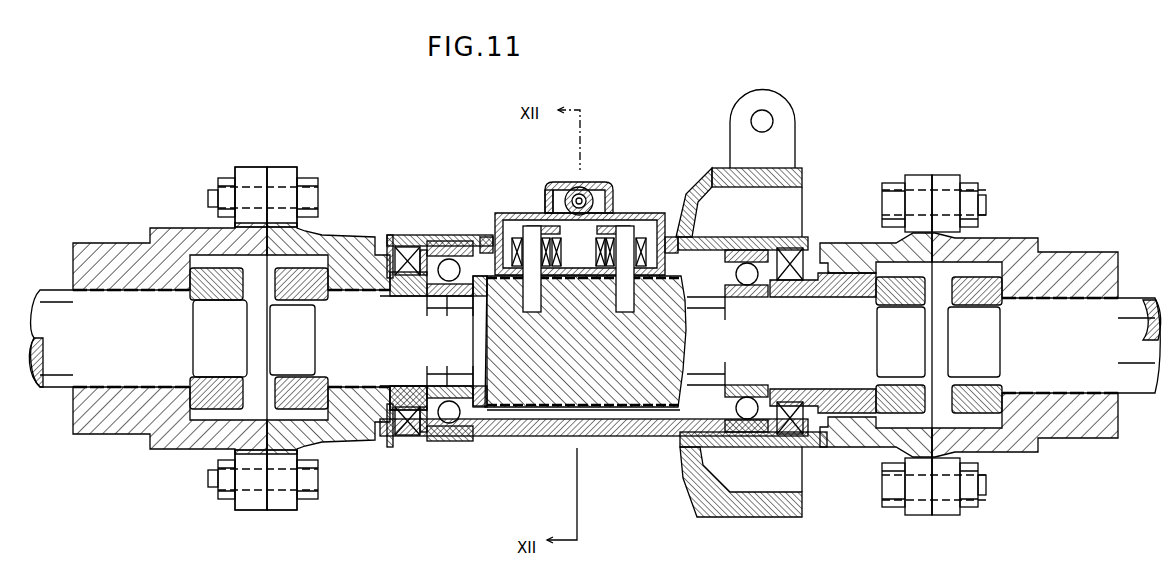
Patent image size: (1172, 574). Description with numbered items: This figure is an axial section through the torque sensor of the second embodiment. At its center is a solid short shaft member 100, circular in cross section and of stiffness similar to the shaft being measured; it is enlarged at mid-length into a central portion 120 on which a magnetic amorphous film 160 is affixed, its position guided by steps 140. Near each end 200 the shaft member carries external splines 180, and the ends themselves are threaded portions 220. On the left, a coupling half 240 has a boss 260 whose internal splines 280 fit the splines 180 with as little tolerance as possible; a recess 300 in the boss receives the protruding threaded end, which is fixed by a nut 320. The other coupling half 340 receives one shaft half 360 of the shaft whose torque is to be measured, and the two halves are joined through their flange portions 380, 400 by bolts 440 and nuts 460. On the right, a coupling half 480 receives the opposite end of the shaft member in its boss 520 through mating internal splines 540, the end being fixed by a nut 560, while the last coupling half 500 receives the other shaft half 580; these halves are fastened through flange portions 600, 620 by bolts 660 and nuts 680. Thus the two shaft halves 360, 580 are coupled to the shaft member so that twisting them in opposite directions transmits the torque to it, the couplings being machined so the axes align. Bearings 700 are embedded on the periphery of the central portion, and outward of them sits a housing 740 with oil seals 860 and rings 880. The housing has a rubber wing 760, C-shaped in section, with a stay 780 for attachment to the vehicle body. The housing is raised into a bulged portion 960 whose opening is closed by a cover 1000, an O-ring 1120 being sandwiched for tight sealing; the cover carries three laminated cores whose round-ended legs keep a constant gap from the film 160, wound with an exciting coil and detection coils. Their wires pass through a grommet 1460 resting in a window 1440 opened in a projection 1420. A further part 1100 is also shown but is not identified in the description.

The shaft member 100 is at (637, 388).
The central portion 120 is at (688, 406).
The steps 140 is at (490, 242).
The magnetic amorphous film 160 is at (607, 408).
The splines 180 is at (401, 297).
The ends 200 is at (267, 326).
The threaded portions 220 is at (297, 368).
The coupling half 240 is at (300, 167).
The boss 260 is at (346, 233).
The internal splines 280 is at (380, 382).
The recess 300 is at (317, 267).
The nut 320 is at (277, 387).
The coupling half 340 is at (241, 166).
The shaft half 360 is at (55, 289).
The flange portion 380 is at (281, 166).
The flange portion 400 is at (250, 166).
The bolts 440 is at (310, 178).
The nuts 460 is at (227, 178).
The coupling half 480 is at (927, 175).
The coupling half 500 is at (952, 173).
The boss 520 is at (840, 243).
The internal splines 540 is at (806, 297).
The nut 560 is at (948, 318).
The shaft half 580 is at (1137, 297).
The flange portion 600 is at (915, 175).
The flange portion 620 is at (963, 175).
The bolts 660 is at (888, 183).
The nuts 680 is at (979, 183).
The bearings 700 is at (448, 295).
The housing 740 is at (392, 236).
The wing 760 is at (802, 168).
The stay 780 is at (794, 124).
The oil seals 860 is at (790, 281).
The rings 880 is at (420, 237).
The bulged portion 960 is at (684, 197).
The cover 1000 is at (497, 212).
The retaining ring 1100 is at (673, 237).
The O-ring 1120 is at (489, 238).
The projection 1420 is at (606, 184).
The window 1440 is at (566, 188).
The grommet 1460 is at (548, 203).